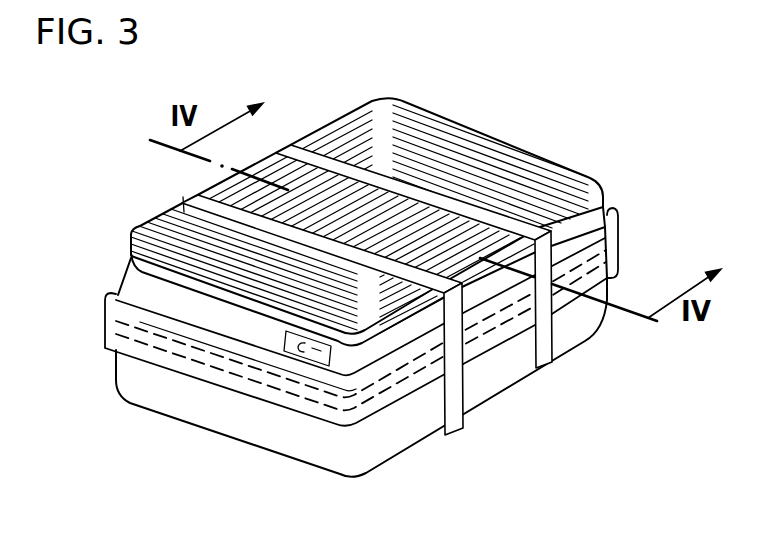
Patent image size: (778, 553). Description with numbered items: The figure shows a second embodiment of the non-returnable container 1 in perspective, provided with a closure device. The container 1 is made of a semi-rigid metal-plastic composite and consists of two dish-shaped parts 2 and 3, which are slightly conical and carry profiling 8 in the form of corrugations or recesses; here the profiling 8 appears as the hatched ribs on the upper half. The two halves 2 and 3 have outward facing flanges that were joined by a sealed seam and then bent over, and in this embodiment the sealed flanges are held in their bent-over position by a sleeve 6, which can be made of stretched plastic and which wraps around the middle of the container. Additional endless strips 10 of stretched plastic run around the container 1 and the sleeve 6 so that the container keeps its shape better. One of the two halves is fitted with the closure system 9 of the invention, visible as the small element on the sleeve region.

The non-returnable container 1 is at (392, 291).
The dish-shaped part 2 is at (385, 450).
The dish-shaped part 3 is at (368, 203).
The sleeve 6 is at (617, 253).
The profiling 8 is at (272, 181).
The closure system 9 is at (320, 357).
The endless strips 10 is at (543, 364).